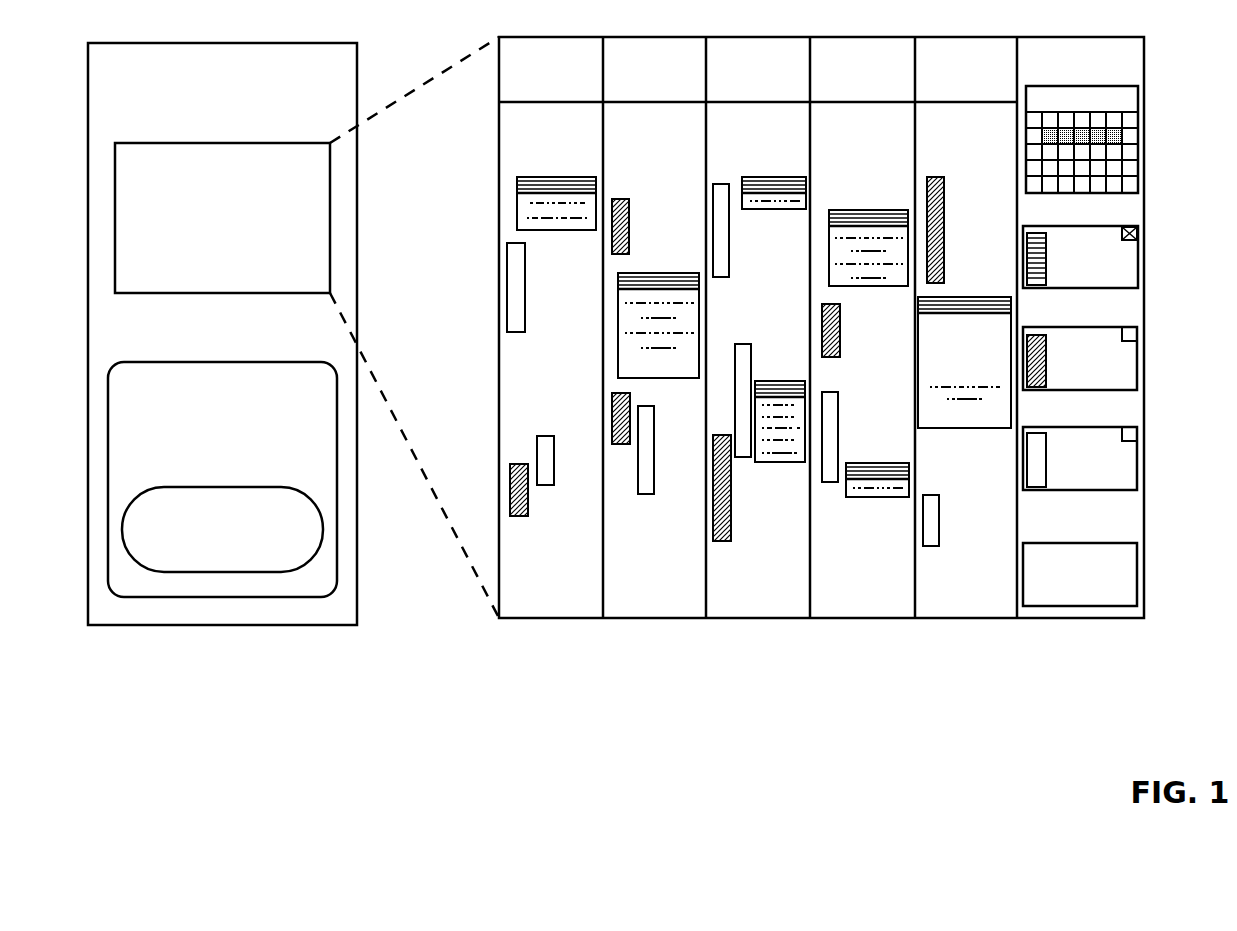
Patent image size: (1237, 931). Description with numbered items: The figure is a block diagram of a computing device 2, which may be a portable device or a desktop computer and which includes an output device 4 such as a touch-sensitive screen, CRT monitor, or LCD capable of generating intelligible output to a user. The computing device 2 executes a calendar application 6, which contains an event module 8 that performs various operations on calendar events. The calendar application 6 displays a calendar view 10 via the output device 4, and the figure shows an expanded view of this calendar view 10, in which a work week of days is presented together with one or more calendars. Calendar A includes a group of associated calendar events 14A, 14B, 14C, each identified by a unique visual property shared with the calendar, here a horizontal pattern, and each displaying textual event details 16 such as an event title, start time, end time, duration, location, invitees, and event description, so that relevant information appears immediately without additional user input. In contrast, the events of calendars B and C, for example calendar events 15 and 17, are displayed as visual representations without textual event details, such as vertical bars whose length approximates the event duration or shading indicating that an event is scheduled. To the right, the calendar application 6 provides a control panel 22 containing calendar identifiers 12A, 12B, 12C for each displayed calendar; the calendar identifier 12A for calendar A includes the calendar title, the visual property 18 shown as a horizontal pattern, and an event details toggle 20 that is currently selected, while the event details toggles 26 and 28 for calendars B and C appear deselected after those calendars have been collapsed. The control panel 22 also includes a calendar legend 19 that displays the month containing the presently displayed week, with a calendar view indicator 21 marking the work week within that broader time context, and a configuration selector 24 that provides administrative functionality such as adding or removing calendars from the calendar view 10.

The computing device 2 is at (218, 113).
The output device 4 is at (214, 215).
The calendar application 6 is at (214, 446).
The event module 8 is at (214, 553).
The calendar view 10 is at (765, 37).
The calendar identifier 12A is at (1092, 241).
The calendar identifier 12B is at (1113, 342).
The calendar identifier 12C is at (1113, 443).
The calendar event 14A is at (518, 179).
The calendar event 14B is at (618, 322).
The calendar event 14C is at (829, 272).
The calendar event 15 is at (537, 438).
The textual event details 16 is at (517, 220).
The calendar event 17 is at (510, 468).
The visual property 18 is at (1028, 255).
The calendar legend 19 is at (1111, 125).
The event details toggle 20 is at (1138, 230).
The calendar view indicator 21 is at (1138, 136).
The control panel 22 is at (1144, 43).
The configuration selector 24 is at (1137, 590).
The event details toggle 26 is at (1137, 330).
The event details toggle 28 is at (1137, 430).